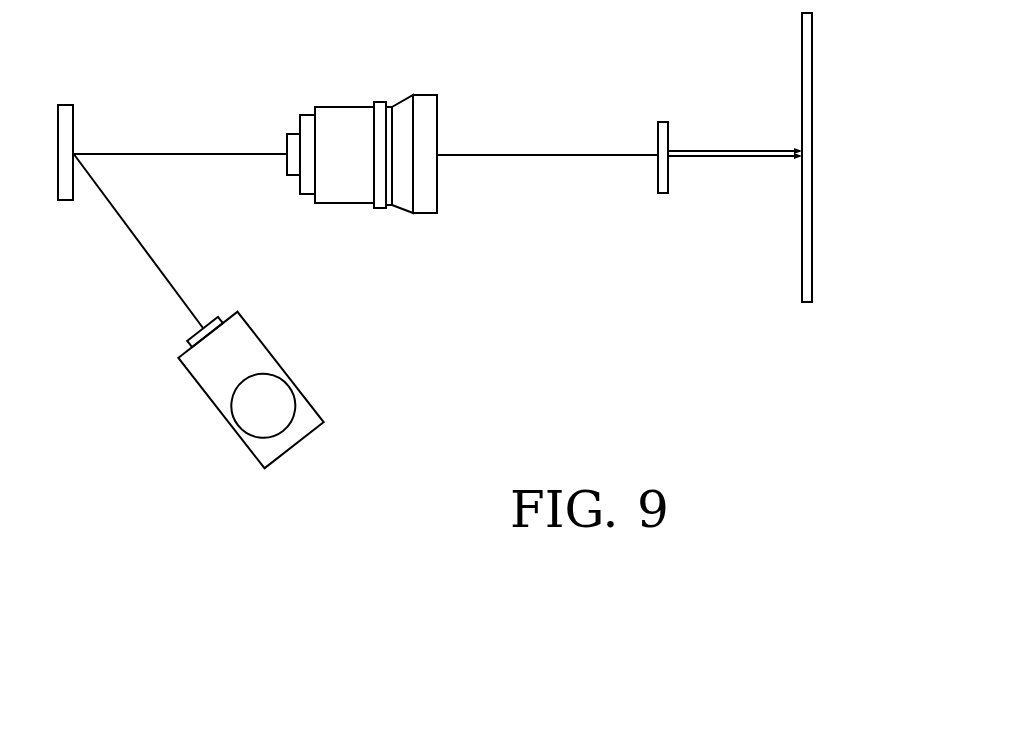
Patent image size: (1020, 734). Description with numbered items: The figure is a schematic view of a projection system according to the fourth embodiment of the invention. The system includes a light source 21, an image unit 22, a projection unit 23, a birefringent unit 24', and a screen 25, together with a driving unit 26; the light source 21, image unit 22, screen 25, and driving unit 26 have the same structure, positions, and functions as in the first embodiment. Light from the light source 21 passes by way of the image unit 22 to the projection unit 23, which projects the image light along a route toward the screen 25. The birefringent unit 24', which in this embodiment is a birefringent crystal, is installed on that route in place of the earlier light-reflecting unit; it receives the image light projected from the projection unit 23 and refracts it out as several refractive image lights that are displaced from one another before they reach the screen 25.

The light source 21 is at (268, 403).
The image unit 22 is at (67, 119).
The projection unit 23 is at (342, 119).
The birefringent unit 24' is at (713, 114).
The screen 25 is at (812, 127).
The driving unit 26 is at (233, 352).